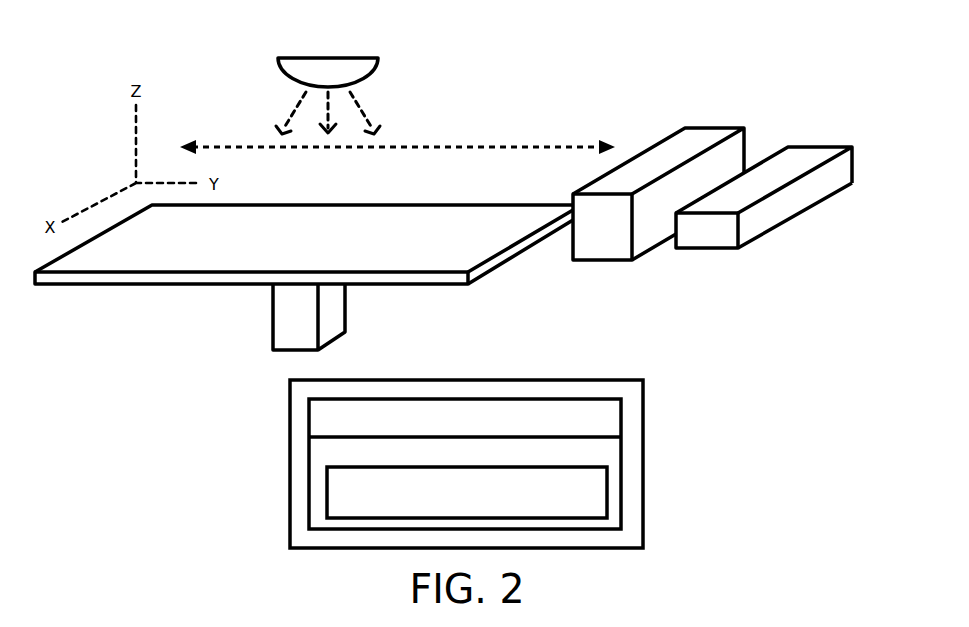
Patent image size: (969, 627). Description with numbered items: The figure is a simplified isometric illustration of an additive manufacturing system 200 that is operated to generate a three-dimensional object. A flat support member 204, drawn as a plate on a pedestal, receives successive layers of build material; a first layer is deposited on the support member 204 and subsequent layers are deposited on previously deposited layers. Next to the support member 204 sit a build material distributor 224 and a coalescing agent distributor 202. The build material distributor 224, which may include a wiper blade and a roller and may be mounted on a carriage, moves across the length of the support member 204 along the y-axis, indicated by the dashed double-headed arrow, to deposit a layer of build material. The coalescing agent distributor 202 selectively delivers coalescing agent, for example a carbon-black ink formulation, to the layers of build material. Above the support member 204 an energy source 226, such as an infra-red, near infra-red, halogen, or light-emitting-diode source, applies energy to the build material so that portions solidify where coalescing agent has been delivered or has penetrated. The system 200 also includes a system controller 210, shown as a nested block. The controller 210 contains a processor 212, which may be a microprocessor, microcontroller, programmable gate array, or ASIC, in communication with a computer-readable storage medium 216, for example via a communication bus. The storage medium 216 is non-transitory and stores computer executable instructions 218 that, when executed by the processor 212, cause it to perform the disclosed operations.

The additive manufacturing system 200 is at (706, 68).
The coalescing agent distributor 202 is at (709, 250).
The support member 204 is at (425, 205).
The system controller 210 is at (433, 464).
The processor 212 is at (465, 424).
The computer-readable storage medium 216 is at (465, 464).
The computer executable instructions 218 is at (467, 492).
The build material distributor 224 is at (690, 128).
The energy source 226 is at (378, 63).